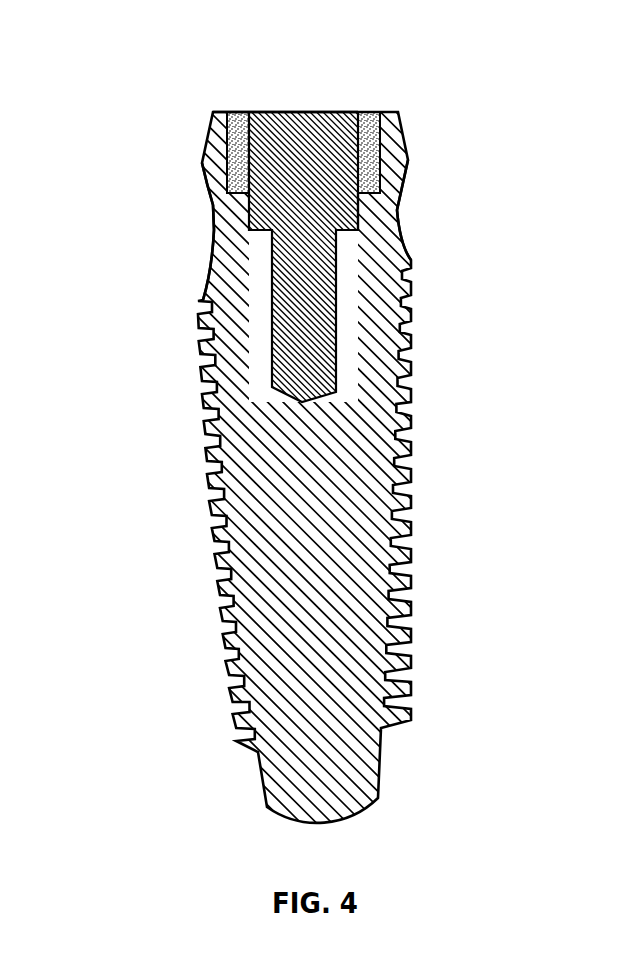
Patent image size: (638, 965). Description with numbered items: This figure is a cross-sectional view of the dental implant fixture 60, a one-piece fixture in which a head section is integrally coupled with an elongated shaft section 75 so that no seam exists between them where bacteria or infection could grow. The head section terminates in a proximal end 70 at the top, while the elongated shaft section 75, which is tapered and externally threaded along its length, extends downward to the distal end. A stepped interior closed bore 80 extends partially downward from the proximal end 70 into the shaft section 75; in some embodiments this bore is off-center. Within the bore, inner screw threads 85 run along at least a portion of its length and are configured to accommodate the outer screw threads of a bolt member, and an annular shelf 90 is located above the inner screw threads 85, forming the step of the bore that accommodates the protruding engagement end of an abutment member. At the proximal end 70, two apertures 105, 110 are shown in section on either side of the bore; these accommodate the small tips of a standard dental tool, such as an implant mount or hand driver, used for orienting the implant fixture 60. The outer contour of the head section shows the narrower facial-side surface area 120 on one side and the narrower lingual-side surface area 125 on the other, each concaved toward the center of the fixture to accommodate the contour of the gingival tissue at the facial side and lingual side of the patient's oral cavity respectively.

The dental implant fixture 60 is at (246, 68).
The proximal end 70 is at (228, 113).
The elongated shaft section 75 is at (411, 433).
The stepped interior closed bore 80 is at (323, 112).
The inner screw threads 85 is at (336, 306).
The annular shelf 90 is at (347, 228).
The aperture 105 is at (380, 130).
The aperture 110 is at (235, 155).
The facial-side surface area 120 is at (399, 221).
The lingual-side surface area 125 is at (213, 220).